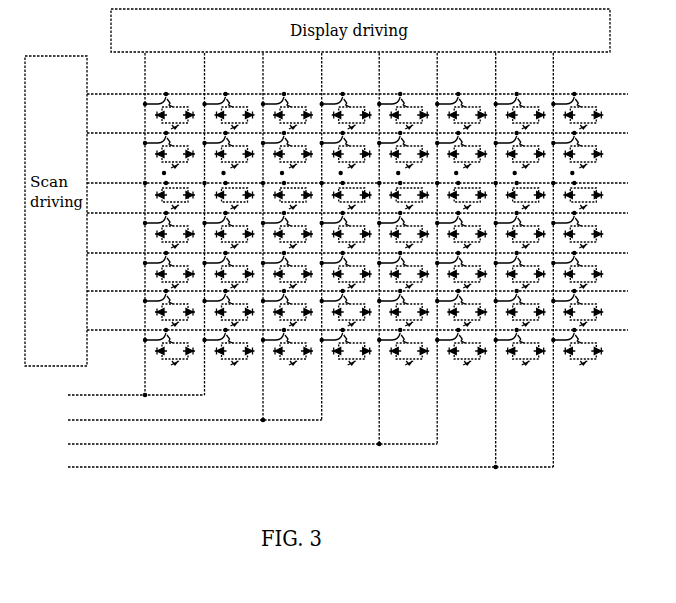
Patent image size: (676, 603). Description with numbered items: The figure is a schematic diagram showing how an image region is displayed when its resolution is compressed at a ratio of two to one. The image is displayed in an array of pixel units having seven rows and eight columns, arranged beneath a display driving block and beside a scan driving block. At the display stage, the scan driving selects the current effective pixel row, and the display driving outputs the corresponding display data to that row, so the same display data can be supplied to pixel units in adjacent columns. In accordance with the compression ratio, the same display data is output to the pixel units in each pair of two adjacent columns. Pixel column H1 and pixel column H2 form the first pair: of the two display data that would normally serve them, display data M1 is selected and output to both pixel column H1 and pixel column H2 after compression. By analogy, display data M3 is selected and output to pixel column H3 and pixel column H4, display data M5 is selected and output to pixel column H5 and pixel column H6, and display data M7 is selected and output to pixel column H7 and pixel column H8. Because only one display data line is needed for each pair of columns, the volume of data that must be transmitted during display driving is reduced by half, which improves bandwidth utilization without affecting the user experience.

The pixel column H1 is at (155, 224).
The pixel column H2 is at (215, 224).
The pixel column H3 is at (273, 236).
The pixel column H4 is at (332, 236).
The pixel column H5 is at (389, 248).
The pixel column H6 is at (447, 248).
The pixel column H7 is at (506, 260).
The pixel column H8 is at (563, 260).
The display data M1 is at (136, 387).
The display data M3 is at (195, 413).
The display data M5 is at (252, 437).
The display data M7 is at (310, 460).